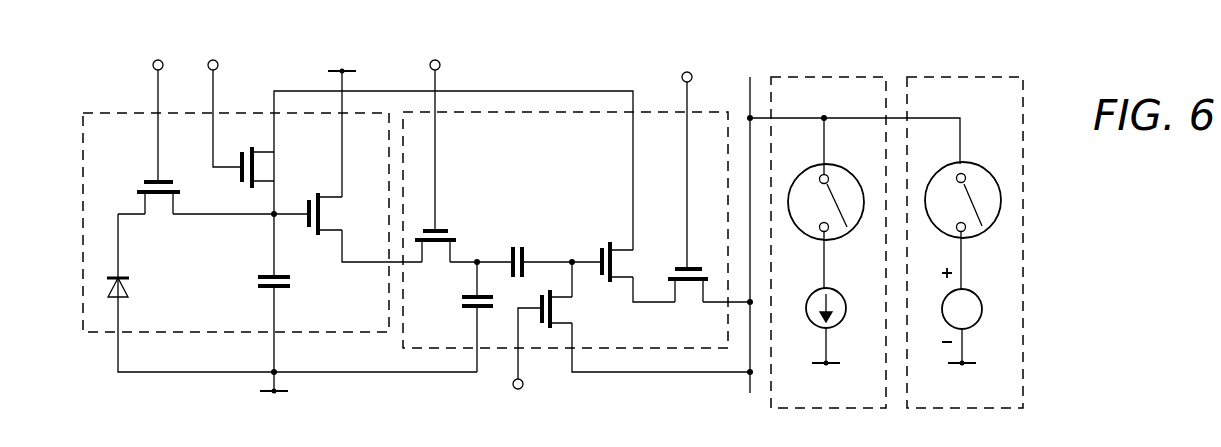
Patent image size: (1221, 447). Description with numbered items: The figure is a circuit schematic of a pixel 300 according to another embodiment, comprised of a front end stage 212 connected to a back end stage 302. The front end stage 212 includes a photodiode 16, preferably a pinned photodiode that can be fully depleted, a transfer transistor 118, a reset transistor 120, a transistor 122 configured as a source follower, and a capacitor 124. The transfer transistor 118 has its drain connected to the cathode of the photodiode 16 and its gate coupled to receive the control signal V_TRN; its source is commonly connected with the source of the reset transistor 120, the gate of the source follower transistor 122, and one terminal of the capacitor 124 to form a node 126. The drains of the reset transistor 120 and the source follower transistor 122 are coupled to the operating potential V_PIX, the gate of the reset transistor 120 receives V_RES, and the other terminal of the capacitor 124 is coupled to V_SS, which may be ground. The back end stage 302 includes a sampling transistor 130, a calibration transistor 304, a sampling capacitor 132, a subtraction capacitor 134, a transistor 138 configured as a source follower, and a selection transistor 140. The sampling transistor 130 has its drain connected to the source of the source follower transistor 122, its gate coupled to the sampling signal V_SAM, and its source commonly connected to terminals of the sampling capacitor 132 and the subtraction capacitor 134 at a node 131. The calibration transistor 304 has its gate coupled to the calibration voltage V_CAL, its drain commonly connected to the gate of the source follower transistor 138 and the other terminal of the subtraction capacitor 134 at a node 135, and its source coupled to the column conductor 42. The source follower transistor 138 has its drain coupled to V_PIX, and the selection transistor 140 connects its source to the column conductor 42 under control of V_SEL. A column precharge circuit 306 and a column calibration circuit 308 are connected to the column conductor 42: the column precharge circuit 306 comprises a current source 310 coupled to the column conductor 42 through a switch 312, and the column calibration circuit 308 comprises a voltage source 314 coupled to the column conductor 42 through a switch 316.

The pixel 300 is at (1148, 188).
The front end stage 212 is at (118, 113).
The transfer transistor 118 is at (159, 198).
The photodiode 16 is at (130, 278).
The reset transistor 120 is at (275, 168).
The source follower transistor 122 is at (331, 212).
The node 126 is at (272, 217).
The capacitor 124 is at (258, 289).
The back end stage 302 is at (522, 114).
The sampling transistor 130 is at (435, 247).
The node 131 is at (478, 258).
The sampling capacitor 132 is at (461, 308).
The subtraction capacitor 134 is at (519, 244).
The node 135 is at (575, 258).
The calibration transistor 304 is at (556, 311).
The source follower transistor 138 is at (626, 260).
The selection transistor 140 is at (688, 305).
The column conductor 42 is at (748, 103).
The column precharge circuit 306 is at (807, 77).
The switch 312 is at (807, 239).
The current source 310 is at (840, 292).
The column calibration circuit 308 is at (984, 77).
The switch 316 is at (988, 172).
The voltage source 314 is at (972, 291).